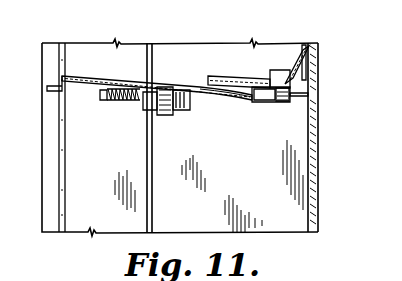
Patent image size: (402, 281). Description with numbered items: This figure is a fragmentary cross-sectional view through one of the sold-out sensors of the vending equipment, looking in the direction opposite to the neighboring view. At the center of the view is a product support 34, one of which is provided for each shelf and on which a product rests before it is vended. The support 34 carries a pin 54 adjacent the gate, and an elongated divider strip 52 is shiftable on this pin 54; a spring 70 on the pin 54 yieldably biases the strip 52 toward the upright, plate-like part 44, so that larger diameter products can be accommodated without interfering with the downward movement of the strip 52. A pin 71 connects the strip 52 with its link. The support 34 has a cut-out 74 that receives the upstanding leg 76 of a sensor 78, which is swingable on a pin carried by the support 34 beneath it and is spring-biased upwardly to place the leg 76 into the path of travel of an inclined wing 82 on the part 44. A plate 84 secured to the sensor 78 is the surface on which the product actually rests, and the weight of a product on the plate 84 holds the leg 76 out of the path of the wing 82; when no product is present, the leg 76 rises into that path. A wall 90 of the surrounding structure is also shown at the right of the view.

The product support 34 is at (163, 85).
The plate-like part 44 is at (307, 43).
The divider strip 52 is at (168, 115).
The pin 54 is at (108, 92).
The spring 70 is at (125, 102).
The pin 71 is at (148, 112).
The cut-out 74 is at (228, 98).
The upstanding leg 76 is at (267, 101).
The sensor 78 is at (285, 102).
The inclined wing 82 is at (300, 61).
The plate 84 is at (223, 77).
The wall 90 is at (319, 156).